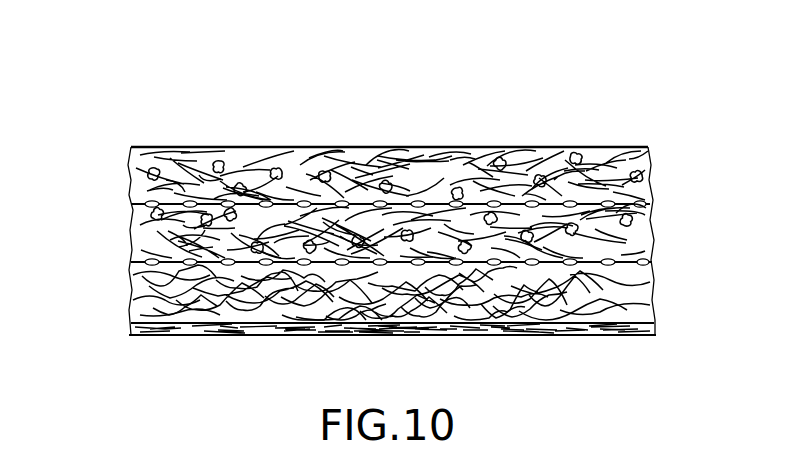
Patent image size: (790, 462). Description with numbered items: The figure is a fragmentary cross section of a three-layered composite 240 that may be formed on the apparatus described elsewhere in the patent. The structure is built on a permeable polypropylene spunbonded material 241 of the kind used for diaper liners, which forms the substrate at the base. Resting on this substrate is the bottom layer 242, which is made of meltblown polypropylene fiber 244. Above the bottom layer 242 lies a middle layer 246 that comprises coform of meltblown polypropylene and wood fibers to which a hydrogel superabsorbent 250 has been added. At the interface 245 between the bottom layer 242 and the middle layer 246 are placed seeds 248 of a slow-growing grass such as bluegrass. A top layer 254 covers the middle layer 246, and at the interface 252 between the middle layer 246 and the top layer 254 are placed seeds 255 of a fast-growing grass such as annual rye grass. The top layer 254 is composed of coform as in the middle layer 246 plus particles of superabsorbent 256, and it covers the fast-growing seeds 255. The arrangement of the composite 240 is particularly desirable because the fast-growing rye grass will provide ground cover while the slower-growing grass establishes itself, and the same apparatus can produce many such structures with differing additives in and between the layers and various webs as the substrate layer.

The composite 240 is at (254, 89).
The permeable polypropylene spunbonded material 241 is at (178, 328).
The bottom layer 242 is at (653, 284).
The meltblown polypropylene fiber 244 is at (130, 304).
The interface 245 is at (130, 258).
The layer 246 is at (652, 222).
The seeds 248 is at (652, 258).
The hydrogel superabsorbent 250 is at (130, 220).
The interface 252 is at (130, 193).
The top layer 254 is at (648, 160).
The seeds 255 is at (651, 200).
The superabsorbent 256 is at (130, 163).